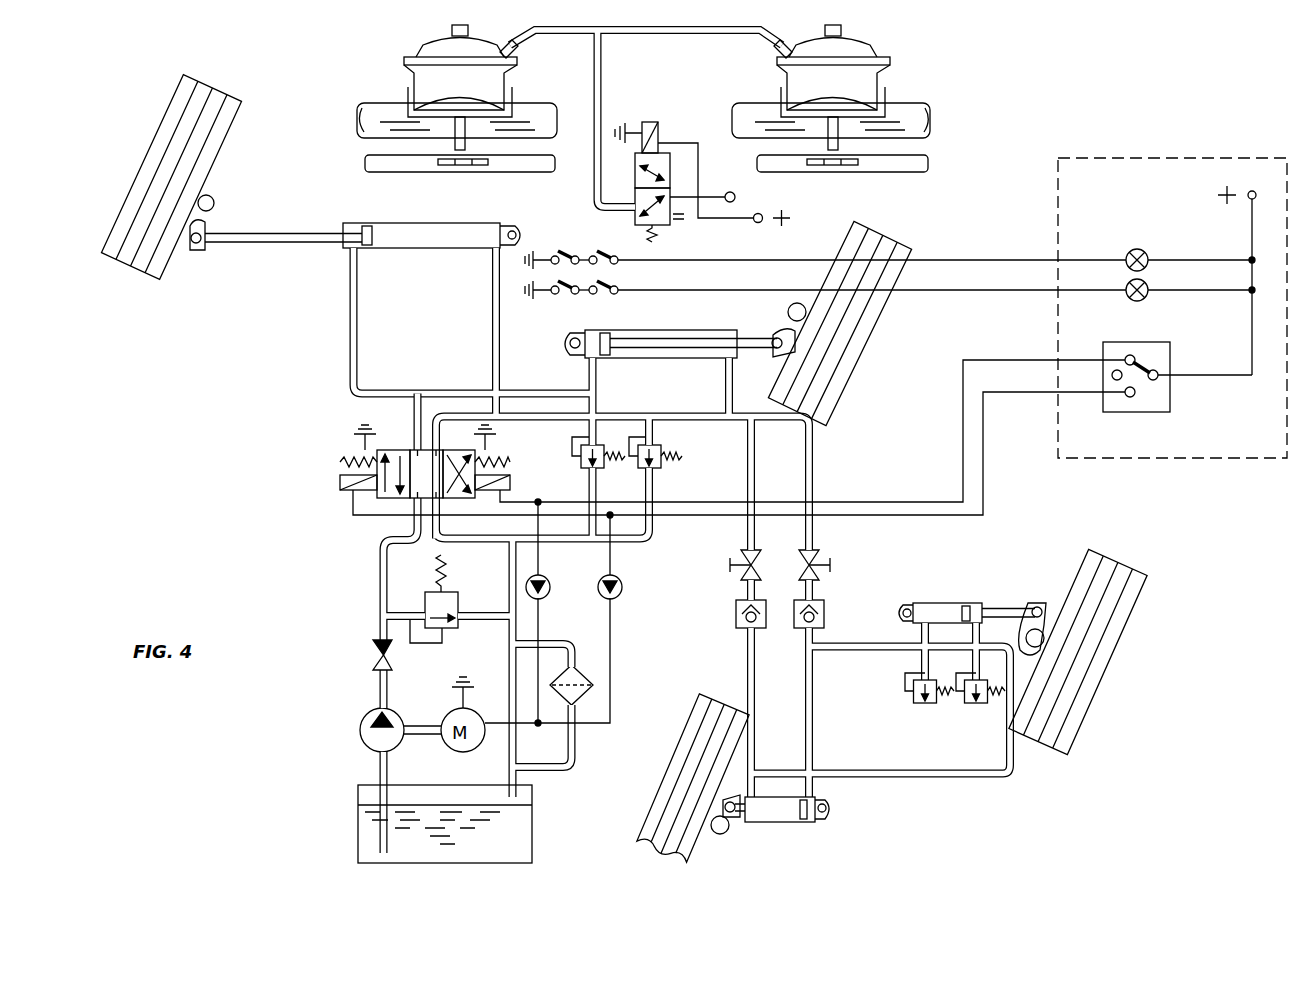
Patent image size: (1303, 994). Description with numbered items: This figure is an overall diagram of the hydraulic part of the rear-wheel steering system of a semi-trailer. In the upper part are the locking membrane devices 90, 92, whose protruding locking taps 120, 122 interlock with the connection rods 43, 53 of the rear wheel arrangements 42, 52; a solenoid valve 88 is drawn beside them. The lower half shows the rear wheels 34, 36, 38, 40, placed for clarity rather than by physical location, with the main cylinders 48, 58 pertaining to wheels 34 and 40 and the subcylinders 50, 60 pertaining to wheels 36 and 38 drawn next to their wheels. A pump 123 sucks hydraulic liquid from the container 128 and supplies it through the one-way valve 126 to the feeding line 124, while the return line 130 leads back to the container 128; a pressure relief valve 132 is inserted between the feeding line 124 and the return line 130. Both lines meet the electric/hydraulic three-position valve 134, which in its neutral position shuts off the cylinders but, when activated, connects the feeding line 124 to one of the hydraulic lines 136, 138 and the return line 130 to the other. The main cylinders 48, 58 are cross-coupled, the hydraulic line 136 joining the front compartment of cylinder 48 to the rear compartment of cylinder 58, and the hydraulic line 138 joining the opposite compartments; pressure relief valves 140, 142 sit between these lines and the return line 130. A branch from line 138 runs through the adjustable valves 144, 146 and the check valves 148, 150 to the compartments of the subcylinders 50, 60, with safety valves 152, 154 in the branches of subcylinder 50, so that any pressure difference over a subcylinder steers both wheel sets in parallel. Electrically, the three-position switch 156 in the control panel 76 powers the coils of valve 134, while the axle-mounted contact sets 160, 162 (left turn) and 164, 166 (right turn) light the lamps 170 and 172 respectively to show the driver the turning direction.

The rear wheel 34 is at (220, 133).
The rear wheel 36 is at (1098, 648).
The rear wheel 38 is at (673, 768).
The rear wheel 40 is at (865, 328).
The rear wheel arrangement 42 is at (342, 147).
The connection rod 43 is at (400, 165).
The main cylinder 48 is at (413, 240).
The subcylinder 50 is at (943, 610).
The rear wheel arrangement 52 is at (945, 148).
The connection rod 53 is at (918, 168).
The main cylinder 58 is at (657, 350).
The subcylinder 60 is at (787, 820).
The control panel 76 is at (1158, 172).
The solenoid valve 88 is at (670, 162).
The locking membrane device 90 is at (425, 43).
The locking membrane device 92 is at (867, 43).
The locking tap 120 is at (462, 128).
The locking tap 122 is at (836, 128).
The pump 123 is at (362, 735).
The feeding line 124 is at (378, 573).
The one-way valve 126 is at (373, 660).
The hydraulic liquid container 128 is at (362, 828).
The return line 130 is at (517, 748).
The pressure relief valve 132 is at (458, 600).
The electric/hydraulic three-position valve 134 is at (380, 500).
The hydraulic line 136 is at (350, 332).
The hydraulic line 138 is at (513, 420).
The pressure relief valve 140 is at (581, 463).
The pressure relief valve 142 is at (663, 460).
The adjustable valve 144 is at (741, 572).
The adjustable valve 146 is at (821, 555).
The check valve 148 is at (740, 630).
The check valve 150 is at (823, 610).
The safety valve 152 is at (976, 703).
The safety valve 154 is at (922, 703).
The three-position switch 156 is at (1150, 412).
The switch set 160 is at (560, 252).
The switch set 162 is at (602, 252).
The switch 164 is at (558, 297).
The switch 166 is at (607, 297).
The lamp 170 is at (1143, 249).
The lamp 172 is at (1146, 300).